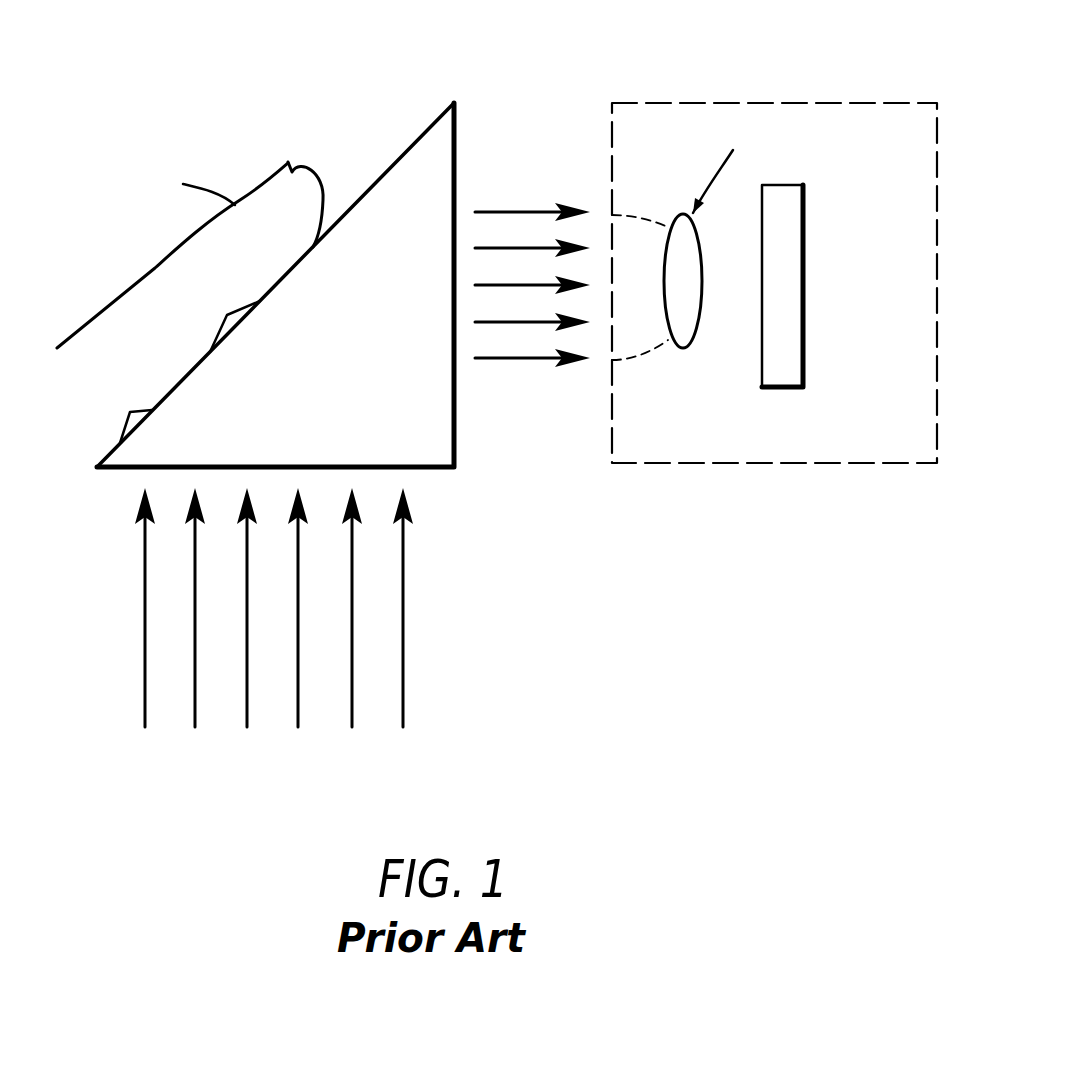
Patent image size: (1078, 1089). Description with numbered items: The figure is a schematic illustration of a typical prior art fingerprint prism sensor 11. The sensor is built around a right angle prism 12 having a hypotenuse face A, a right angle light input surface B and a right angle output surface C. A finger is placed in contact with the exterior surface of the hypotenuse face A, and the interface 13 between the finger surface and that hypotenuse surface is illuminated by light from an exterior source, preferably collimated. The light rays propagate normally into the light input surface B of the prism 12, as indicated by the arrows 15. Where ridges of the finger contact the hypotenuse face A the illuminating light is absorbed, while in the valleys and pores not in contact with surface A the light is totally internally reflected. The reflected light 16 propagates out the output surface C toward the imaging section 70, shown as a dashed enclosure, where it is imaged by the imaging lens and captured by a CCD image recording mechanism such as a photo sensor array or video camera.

The fingerprint prism sensor 11 is at (308, 145).
The right angle prism 12 is at (435, 370).
The interface 13 is at (277, 283).
The arrows 15 is at (403, 640).
The reflected light 16 is at (512, 212).
The imaging system (imaging lens and CCD) 70 is at (712, 103).